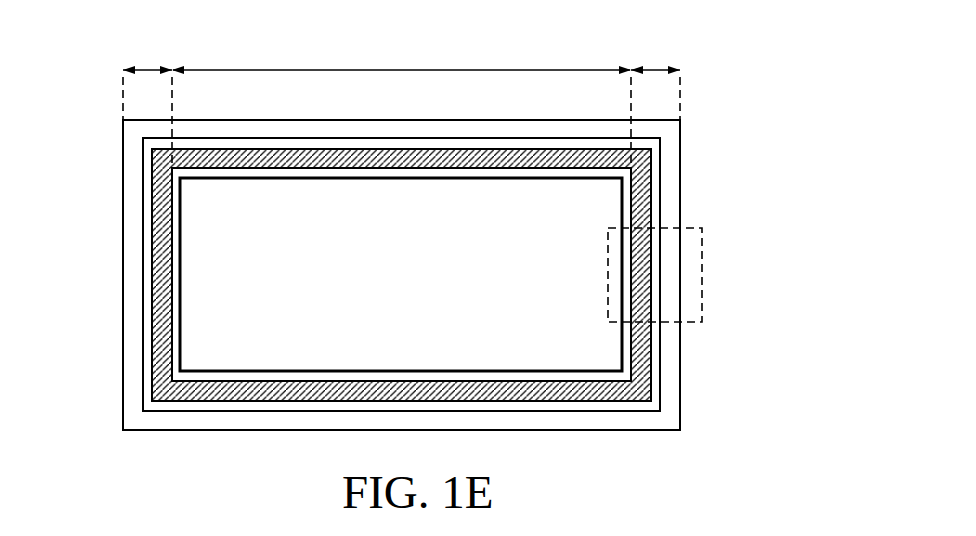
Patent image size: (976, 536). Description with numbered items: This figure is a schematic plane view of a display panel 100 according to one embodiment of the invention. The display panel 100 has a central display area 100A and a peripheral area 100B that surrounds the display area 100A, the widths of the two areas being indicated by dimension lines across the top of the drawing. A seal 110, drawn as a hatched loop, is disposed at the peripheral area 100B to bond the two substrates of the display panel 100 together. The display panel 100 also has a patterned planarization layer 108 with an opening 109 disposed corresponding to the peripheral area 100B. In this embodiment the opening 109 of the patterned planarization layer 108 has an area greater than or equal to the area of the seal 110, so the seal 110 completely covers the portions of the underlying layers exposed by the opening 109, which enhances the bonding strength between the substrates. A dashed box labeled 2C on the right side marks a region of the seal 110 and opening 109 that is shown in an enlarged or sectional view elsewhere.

The display panel 100 is at (702, 102).
The display area 100A is at (401, 99).
The peripheral area 100B is at (405, 75).
The patterned planarization layer 108 is at (197, 339).
The opening 109 is at (143, 213).
The seal 110 is at (152, 270).
The cross-section region of FIG. 2C is at (703, 258).